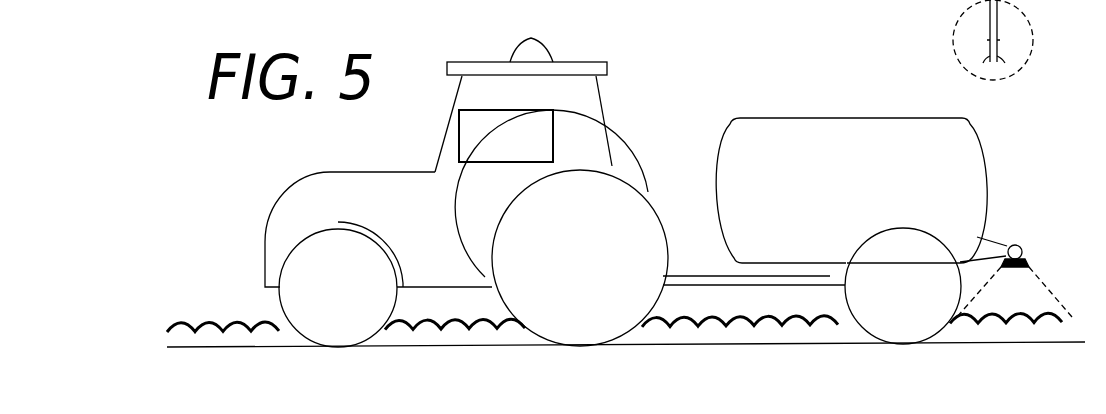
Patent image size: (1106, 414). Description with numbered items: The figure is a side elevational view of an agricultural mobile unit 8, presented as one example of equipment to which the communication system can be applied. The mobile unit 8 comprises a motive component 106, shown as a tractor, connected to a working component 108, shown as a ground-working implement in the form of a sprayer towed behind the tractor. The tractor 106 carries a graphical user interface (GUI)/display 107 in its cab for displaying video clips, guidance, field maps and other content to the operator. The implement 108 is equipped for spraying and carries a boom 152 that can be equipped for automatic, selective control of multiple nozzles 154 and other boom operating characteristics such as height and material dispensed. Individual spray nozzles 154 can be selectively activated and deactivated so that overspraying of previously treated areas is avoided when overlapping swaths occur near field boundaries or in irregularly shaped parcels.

The agricultural mobile unit 8 is at (710, 68).
The motive component 106 is at (408, 208).
The graphical user interface (GUI)/display 107 is at (519, 110).
The working component 108 is at (880, 207).
The boom 152 is at (1018, 244).
The nozzles 154 is at (1020, 270).